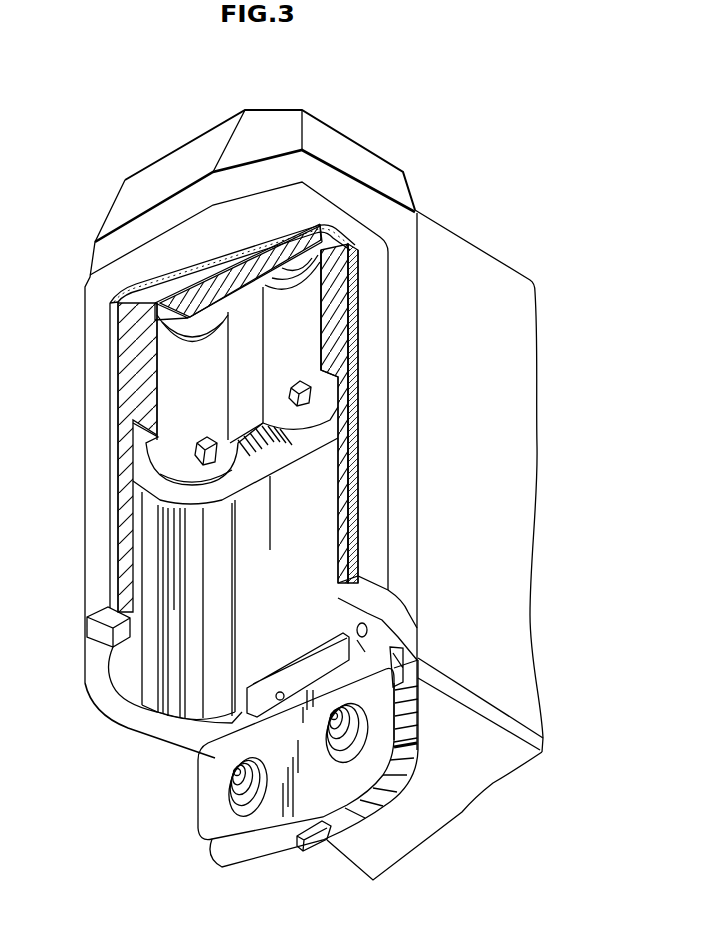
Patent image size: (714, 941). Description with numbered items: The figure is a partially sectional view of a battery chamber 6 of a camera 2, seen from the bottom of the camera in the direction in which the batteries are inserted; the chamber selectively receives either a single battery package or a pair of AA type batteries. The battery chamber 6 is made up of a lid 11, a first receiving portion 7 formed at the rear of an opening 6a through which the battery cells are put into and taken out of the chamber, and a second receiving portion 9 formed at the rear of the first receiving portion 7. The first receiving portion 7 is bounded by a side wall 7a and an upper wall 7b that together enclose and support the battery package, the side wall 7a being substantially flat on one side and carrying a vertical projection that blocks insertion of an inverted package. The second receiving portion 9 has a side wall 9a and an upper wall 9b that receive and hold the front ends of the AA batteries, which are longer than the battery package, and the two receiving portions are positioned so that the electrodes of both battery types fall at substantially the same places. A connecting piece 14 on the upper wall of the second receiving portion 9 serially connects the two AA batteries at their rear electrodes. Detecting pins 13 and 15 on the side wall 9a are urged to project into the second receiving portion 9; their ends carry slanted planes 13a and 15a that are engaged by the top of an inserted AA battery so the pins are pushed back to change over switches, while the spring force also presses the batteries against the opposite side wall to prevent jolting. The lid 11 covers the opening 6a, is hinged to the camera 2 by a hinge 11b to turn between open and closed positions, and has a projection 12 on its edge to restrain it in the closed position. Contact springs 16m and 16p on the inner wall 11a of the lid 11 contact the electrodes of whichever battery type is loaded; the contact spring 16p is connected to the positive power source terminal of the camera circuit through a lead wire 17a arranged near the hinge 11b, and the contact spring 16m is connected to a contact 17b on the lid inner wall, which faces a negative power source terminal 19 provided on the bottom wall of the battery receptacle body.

The camera 2 is at (500, 742).
The battery chamber 6 is at (82, 568).
The opening 6a is at (162, 720).
The first receiving portion 7 is at (182, 562).
The side wall 7a is at (147, 593).
The upper wall 7b is at (157, 488).
The second receiving portion 9 is at (185, 375).
The side wall 9a is at (177, 405).
The upper wall 9b is at (170, 345).
The lid 11 is at (230, 843).
The inner wall 11a is at (200, 818).
The hinge 11b is at (427, 710).
The projection 12 is at (320, 850).
The detecting pin 13 is at (208, 440).
The slanted plane 13a is at (193, 464).
The connecting piece 14 is at (168, 322).
The detecting pin 15 is at (302, 383).
The slanted plane 15a is at (296, 405).
The contact spring 16p is at (267, 780).
The contact spring 16m is at (363, 740).
The lead wire 17a is at (288, 672).
The contact 17b is at (403, 680).
The negative power source terminal 19 is at (358, 625).